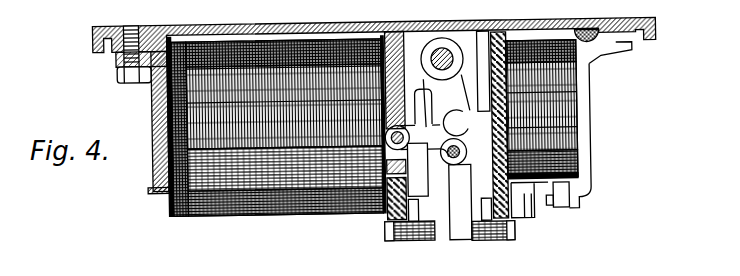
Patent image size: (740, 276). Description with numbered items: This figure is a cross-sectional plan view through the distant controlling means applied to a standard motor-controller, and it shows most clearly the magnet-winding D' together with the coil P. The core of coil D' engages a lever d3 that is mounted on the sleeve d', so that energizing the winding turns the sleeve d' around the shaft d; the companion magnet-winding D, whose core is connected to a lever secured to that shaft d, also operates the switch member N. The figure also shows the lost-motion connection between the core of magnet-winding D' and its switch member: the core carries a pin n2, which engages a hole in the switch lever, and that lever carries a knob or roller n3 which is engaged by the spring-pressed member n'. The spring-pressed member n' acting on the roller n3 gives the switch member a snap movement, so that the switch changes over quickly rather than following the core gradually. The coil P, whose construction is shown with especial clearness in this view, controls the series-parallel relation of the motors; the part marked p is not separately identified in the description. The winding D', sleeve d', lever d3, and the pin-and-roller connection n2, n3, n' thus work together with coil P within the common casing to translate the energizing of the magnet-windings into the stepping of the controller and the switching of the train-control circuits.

The magnet-winding D is at (374, 34).
The magnet-winding D' is at (277, 142).
The shaft d is at (450, 81).
The sleeve d' is at (430, 54).
The spring-pressed member n' is at (418, 97).
The pin n2 is at (478, 103).
The knob or roller n3 is at (447, 158).
The lever d3 is at (466, 187).
The switch member N is at (453, 207).
The coil P is at (577, 147).
The terminal block p is at (557, 210).